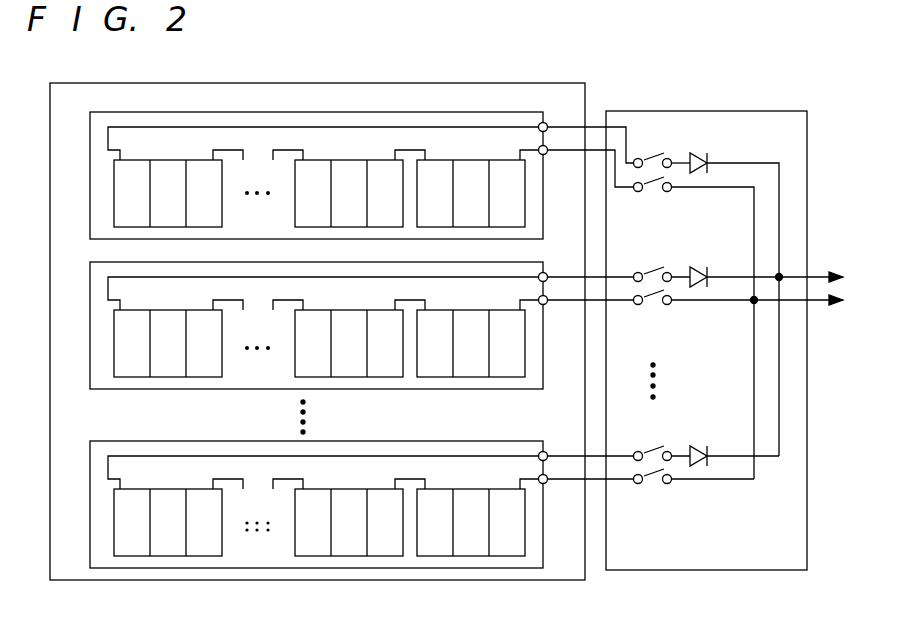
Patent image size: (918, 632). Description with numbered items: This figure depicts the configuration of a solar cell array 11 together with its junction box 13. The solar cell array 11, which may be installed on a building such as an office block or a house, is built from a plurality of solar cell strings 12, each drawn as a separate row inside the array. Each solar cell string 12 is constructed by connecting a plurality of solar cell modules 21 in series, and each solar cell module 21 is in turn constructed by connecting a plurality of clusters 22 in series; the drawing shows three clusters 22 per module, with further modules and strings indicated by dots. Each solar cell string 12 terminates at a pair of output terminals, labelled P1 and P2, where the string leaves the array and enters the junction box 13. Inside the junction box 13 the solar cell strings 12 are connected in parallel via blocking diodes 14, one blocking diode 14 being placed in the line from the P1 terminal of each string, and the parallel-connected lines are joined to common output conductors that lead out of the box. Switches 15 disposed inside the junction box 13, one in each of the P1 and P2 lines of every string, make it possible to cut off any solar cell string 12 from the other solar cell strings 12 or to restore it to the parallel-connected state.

The solar cell array 11 is at (408, 83).
The solar cell string 12 is at (90, 177).
The junction box 13 is at (723, 111).
The blocking diode 14 is at (697, 153).
The switch 15 is at (648, 157).
The solar cell module 21 is at (325, 308).
The cluster 22 is at (319, 358).
The positive terminal P1 is at (549, 122).
The negative terminal P2 is at (548, 155).